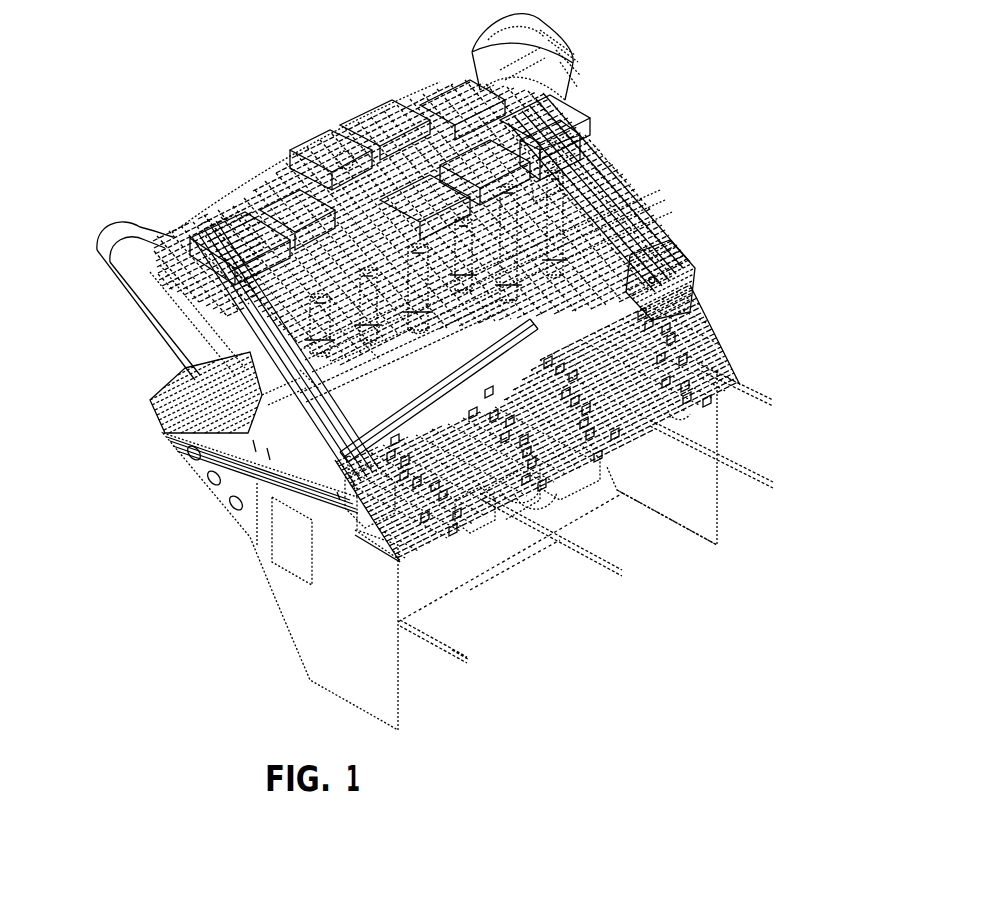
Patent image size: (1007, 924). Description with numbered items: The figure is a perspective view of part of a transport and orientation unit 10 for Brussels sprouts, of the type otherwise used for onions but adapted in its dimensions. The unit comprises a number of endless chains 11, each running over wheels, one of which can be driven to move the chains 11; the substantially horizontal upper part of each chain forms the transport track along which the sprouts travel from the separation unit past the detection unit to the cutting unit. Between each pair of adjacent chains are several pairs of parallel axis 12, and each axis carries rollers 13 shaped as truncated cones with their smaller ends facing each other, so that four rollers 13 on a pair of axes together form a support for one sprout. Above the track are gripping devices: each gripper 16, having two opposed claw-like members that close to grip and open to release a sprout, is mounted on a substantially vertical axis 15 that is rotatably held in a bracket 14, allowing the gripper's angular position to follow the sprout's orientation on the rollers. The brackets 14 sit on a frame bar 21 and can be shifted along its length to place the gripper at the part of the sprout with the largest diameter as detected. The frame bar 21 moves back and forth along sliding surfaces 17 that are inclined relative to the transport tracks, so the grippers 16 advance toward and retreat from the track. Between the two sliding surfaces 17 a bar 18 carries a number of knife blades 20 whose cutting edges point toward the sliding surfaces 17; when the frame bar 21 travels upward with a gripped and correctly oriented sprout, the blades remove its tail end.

The transport and orientation unit 10 is at (205, 18).
The endless chains 11 is at (455, 660).
The parallel axis 12 is at (475, 506).
The rollers 13 is at (550, 474).
The bracket 14 is at (375, 285).
The vertical axis 15 is at (463, 283).
The gripper 16 is at (417, 327).
The sliding surface 17 is at (262, 352).
The bar 18 is at (485, 330).
The knife blades 20 is at (463, 340).
The frame bar 21 is at (565, 148).